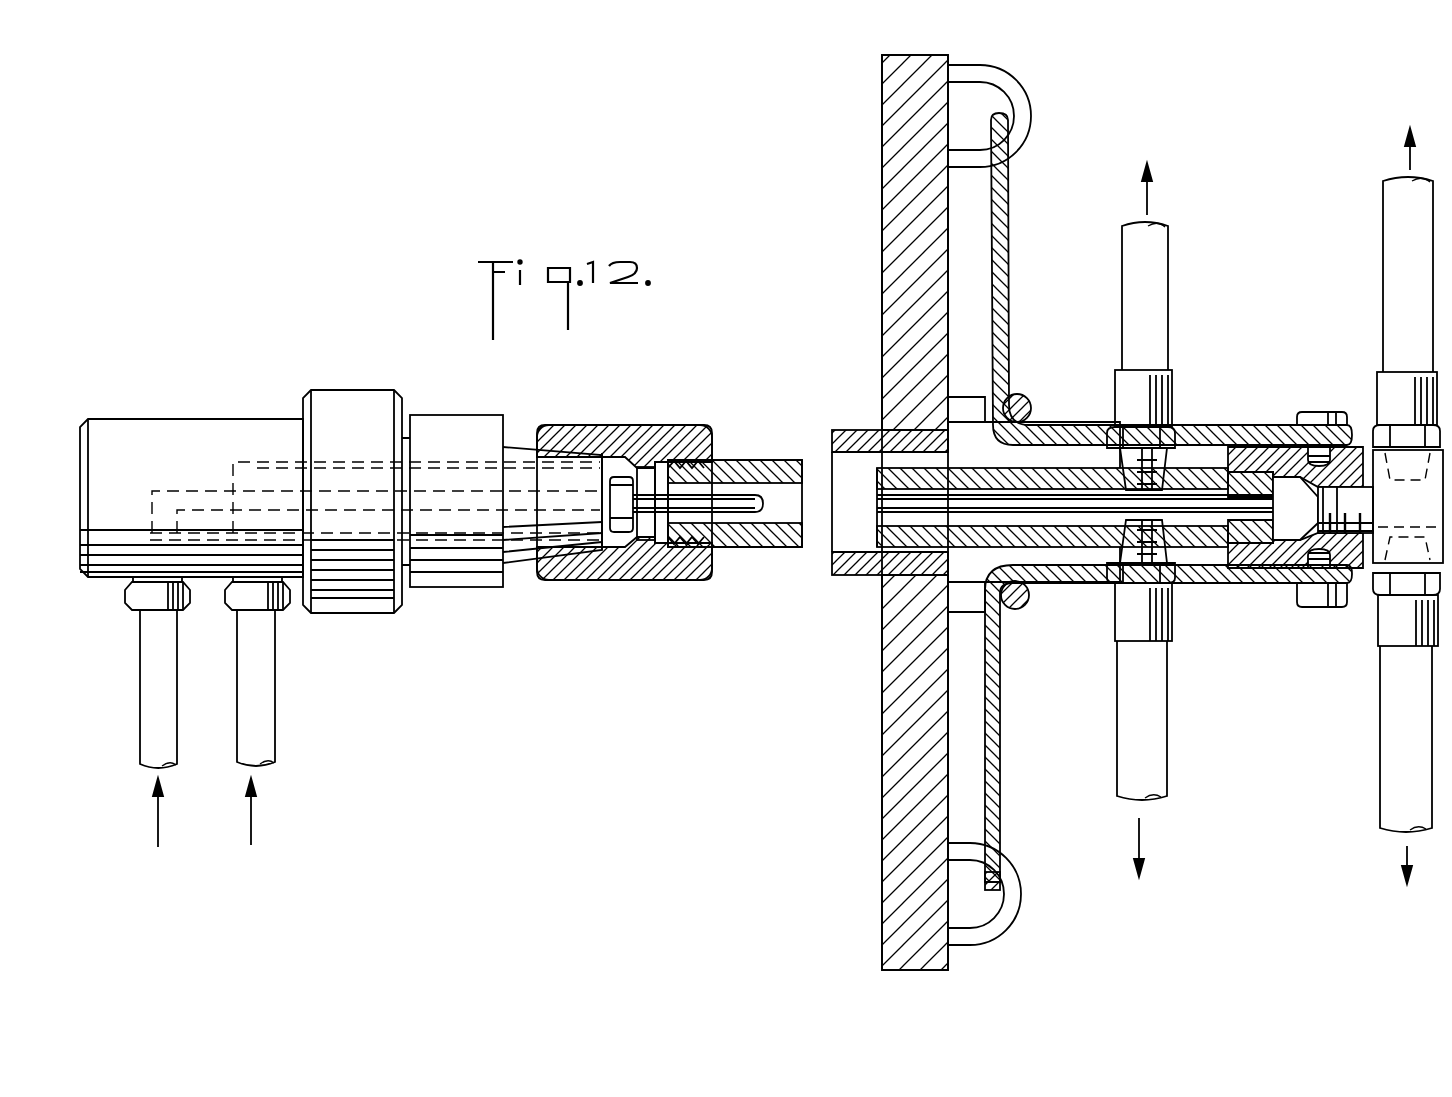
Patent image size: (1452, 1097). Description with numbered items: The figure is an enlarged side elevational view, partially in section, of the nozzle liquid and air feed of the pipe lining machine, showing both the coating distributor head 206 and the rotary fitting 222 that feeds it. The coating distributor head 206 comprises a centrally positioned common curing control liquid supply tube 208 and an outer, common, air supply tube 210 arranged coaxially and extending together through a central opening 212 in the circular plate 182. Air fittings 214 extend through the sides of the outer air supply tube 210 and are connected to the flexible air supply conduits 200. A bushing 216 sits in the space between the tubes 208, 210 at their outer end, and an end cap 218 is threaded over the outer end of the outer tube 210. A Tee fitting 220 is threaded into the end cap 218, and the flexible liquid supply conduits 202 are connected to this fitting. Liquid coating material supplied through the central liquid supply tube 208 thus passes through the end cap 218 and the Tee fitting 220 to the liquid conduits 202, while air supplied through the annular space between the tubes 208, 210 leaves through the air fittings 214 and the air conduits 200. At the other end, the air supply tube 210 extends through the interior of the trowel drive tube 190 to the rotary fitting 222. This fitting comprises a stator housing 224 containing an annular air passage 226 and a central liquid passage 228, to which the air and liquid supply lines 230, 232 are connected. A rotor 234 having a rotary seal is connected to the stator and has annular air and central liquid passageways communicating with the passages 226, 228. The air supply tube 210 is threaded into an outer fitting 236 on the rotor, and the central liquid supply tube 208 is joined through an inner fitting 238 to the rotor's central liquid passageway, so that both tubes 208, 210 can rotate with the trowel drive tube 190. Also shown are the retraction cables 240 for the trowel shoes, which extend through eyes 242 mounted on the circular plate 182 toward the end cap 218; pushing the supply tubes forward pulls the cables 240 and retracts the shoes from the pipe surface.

The circular plate 182 is at (893, 210).
The trowel drive tube 190 is at (855, 570).
The flexible air supply conduits 200 is at (1168, 270).
The flexible liquid supply conduits 202 is at (1393, 224).
The coating distributor head 206 is at (1258, 360).
The common curing control liquid supply tube 208 is at (752, 497).
The outer common air supply tube 210 is at (762, 550).
The central opening 212 is at (883, 460).
The air fittings 214 is at (1178, 427).
The bushing 216 is at (1250, 543).
The end cap 218 is at (1270, 448).
The Tee fitting 220 is at (1418, 514).
The rotary fitting 222 is at (378, 380).
The stator housing 224 is at (280, 419).
The annular air passage 226 is at (255, 470).
The central liquid passage 228 is at (173, 487).
The air supply line 230 is at (268, 718).
The liquid supply line 232 is at (160, 715).
The rotor 234 is at (477, 417).
The outer fitting 236 is at (635, 427).
The inner fitting 238 is at (625, 532).
The retraction cables 240 is at (1008, 197).
The eyes 242 is at (1020, 118).